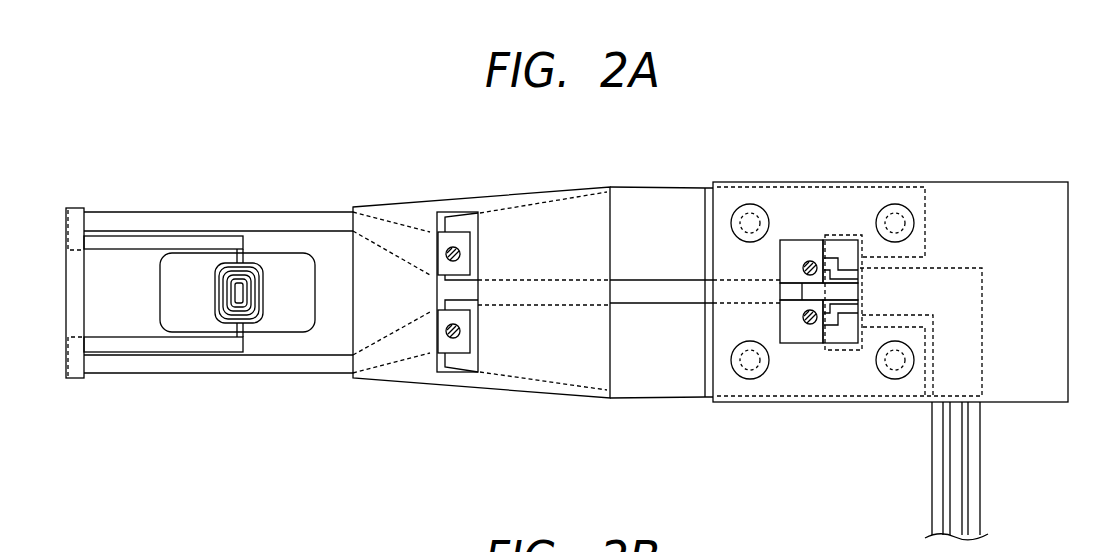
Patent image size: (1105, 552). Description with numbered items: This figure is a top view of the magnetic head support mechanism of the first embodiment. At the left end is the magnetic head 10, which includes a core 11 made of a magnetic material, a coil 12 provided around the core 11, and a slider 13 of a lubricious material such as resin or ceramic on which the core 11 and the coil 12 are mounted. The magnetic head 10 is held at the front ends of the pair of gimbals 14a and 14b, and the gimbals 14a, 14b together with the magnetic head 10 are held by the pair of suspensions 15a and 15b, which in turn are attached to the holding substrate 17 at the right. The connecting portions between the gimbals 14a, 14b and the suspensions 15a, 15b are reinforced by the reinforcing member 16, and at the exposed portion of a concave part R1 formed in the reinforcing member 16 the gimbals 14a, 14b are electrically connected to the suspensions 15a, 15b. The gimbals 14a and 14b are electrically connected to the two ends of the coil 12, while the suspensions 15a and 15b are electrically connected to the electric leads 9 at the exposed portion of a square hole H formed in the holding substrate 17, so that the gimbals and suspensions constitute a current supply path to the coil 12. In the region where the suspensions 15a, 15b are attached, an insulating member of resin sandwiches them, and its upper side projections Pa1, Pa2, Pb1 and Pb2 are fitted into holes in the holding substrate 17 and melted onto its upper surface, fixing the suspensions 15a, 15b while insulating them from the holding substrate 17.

The electric leads 9 is at (841, 268).
The magnetic head 10 is at (199, 348).
The core 11 is at (223, 320).
The coil 12 is at (217, 287).
The slider 13 is at (168, 308).
The gimbal 14a is at (302, 366).
The gimbal 14b is at (293, 219).
The suspension 15a is at (650, 371).
The suspension 15b is at (648, 215).
The reinforcing member 16 is at (415, 372).
The holding substrate 17 is at (1024, 207).
The concave part R1 is at (458, 216).
The square hole H is at (843, 338).
The projection Pa1 is at (750, 360).
The projection Pa2 is at (895, 360).
The projection Pb1 is at (750, 222).
The projection Pb2 is at (897, 222).